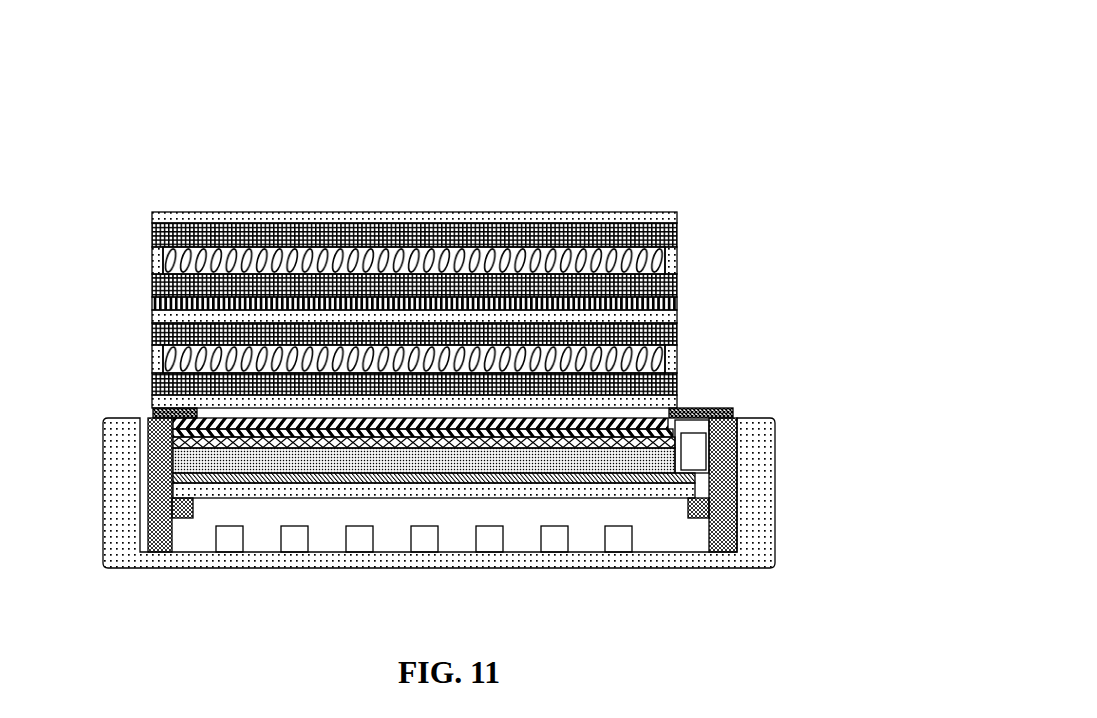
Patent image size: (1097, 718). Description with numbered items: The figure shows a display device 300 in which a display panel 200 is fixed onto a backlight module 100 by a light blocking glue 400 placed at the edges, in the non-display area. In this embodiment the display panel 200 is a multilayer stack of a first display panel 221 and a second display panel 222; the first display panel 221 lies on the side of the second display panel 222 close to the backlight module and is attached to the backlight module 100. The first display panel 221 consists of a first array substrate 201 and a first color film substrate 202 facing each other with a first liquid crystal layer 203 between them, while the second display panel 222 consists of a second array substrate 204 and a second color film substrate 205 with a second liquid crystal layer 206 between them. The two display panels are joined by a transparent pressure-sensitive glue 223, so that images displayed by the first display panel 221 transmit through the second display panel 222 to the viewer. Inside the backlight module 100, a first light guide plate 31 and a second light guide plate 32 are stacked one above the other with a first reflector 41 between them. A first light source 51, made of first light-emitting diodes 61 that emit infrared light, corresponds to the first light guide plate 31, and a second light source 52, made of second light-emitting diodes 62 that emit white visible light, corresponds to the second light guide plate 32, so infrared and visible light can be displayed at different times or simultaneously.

The display device 300 is at (739, 39).
The display panel 200 is at (85, 248).
The second display panel 222 is at (150, 212).
The first display panel 221 is at (150, 312).
The pressure-sensitive glue 223 is at (677, 302).
The second color film substrate 205 is at (677, 232).
The second liquid crystal layer 206 is at (472, 257).
The second array substrate 204 is at (677, 282).
The first color film substrate 202 is at (677, 330).
The first liquid crystal layer 203 is at (568, 363).
The first array substrate 201 is at (677, 380).
The light blocking glue 400 is at (700, 408).
The backlight module 100 is at (777, 418).
The second light guide plate 32 is at (187, 463).
The first reflector 41 is at (185, 478).
The first light guide plate 31 is at (187, 494).
The first light source 51 is at (362, 538).
The first light-emitting diodes 61 is at (424, 539).
The second light source 52 is at (693, 452).
The second light-emitting diodes 62 is at (692, 446).